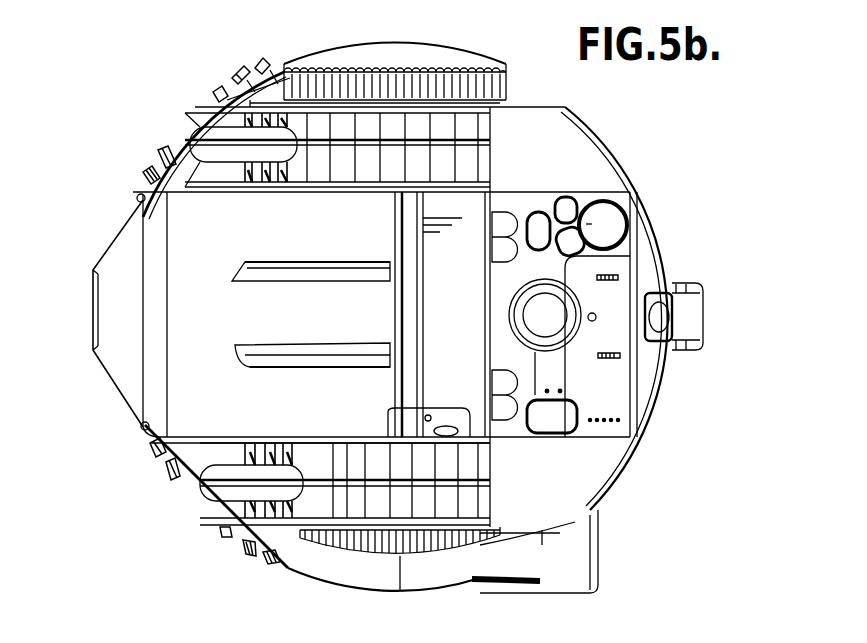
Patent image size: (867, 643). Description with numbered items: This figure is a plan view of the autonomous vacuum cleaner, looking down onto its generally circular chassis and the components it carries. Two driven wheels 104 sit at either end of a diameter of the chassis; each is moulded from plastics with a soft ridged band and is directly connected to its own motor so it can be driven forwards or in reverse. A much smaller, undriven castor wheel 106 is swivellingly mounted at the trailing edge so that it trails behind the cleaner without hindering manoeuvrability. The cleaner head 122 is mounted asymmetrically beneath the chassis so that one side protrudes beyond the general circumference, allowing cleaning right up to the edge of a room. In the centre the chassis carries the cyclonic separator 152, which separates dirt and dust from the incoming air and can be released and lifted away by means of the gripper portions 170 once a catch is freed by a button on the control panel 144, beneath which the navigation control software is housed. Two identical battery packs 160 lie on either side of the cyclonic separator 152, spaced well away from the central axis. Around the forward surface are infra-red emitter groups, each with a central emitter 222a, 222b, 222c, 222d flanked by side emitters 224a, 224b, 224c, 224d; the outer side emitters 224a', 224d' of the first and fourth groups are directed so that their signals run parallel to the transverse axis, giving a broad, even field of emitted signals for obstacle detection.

The driven wheel 104 is at (467, 48).
The castor wheel 106 is at (692, 327).
The cleaner head 122 is at (583, 572).
The control panel 144 is at (612, 372).
The cyclonic separator 152 is at (217, 323).
The battery pack 160 is at (483, 128).
The gripper portion 170 is at (293, 272).
The central emitter 222a is at (243, 555).
The central emitter 222b is at (150, 450).
The central emitter 222c is at (152, 168).
The central emitter 222d is at (236, 70).
The side emitter 224a is at (203, 558).
The fastener 224a' is at (300, 586).
The side emitter 224b is at (140, 427).
The side emitter 224c is at (168, 147).
The side emitter 224d is at (192, 73).
The fastener 224d' is at (285, 41).